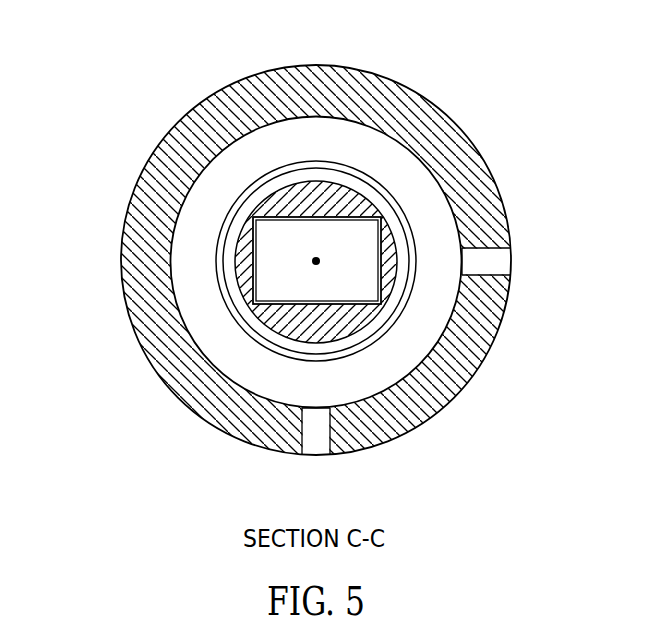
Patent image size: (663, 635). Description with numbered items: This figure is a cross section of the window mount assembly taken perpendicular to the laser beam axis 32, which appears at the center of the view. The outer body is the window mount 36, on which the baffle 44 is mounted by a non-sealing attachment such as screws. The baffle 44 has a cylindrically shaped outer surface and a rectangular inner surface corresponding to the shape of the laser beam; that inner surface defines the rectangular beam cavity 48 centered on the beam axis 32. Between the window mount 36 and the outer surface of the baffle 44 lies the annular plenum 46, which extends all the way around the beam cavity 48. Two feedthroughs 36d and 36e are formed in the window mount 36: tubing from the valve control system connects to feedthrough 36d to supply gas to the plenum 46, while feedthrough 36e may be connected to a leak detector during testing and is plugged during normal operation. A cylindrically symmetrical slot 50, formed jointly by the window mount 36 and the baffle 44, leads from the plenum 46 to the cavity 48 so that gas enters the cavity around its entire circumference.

The laser beam axis 32 is at (316, 261).
The window mount 36 is at (393, 100).
The feedthrough 36d is at (505, 259).
The feedthrough 36e is at (312, 449).
The baffle 44 is at (323, 187).
The annular plenum 46 is at (178, 262).
The beam cavity 48 is at (273, 227).
The slot 50 is at (390, 332).